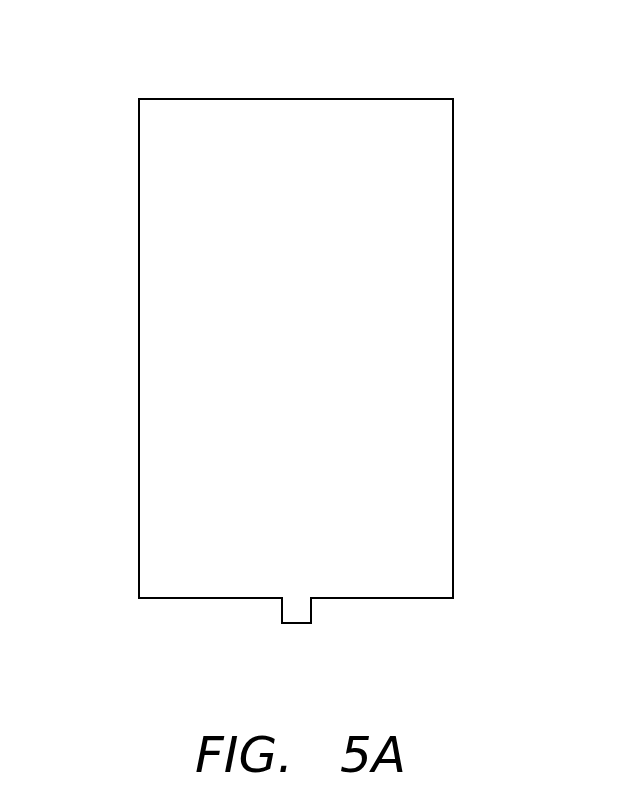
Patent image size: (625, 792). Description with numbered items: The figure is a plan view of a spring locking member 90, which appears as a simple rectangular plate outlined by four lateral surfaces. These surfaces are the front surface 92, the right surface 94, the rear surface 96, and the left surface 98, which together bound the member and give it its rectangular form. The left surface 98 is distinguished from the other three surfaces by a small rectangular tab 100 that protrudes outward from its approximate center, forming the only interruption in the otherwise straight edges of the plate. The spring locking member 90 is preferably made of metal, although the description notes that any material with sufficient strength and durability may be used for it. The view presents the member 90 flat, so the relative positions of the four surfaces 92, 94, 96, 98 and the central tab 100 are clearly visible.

The spring locking member 90 is at (466, 651).
The front surface 92 is at (453, 462).
The right surface 94 is at (313, 98).
The rear surface 96 is at (139, 241).
The left surface 98 is at (215, 598).
The tab 100 is at (311, 610).